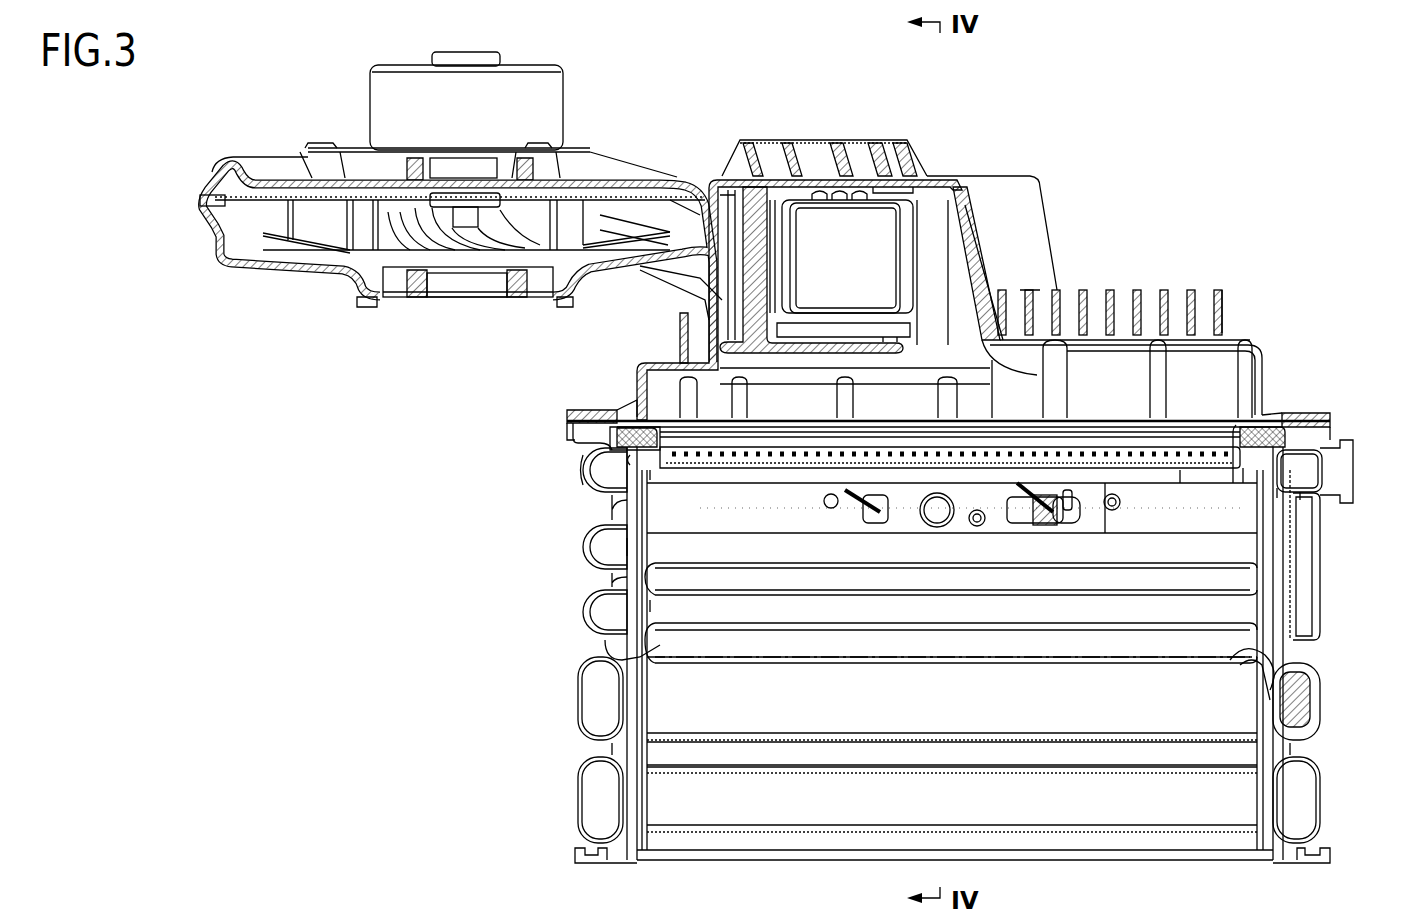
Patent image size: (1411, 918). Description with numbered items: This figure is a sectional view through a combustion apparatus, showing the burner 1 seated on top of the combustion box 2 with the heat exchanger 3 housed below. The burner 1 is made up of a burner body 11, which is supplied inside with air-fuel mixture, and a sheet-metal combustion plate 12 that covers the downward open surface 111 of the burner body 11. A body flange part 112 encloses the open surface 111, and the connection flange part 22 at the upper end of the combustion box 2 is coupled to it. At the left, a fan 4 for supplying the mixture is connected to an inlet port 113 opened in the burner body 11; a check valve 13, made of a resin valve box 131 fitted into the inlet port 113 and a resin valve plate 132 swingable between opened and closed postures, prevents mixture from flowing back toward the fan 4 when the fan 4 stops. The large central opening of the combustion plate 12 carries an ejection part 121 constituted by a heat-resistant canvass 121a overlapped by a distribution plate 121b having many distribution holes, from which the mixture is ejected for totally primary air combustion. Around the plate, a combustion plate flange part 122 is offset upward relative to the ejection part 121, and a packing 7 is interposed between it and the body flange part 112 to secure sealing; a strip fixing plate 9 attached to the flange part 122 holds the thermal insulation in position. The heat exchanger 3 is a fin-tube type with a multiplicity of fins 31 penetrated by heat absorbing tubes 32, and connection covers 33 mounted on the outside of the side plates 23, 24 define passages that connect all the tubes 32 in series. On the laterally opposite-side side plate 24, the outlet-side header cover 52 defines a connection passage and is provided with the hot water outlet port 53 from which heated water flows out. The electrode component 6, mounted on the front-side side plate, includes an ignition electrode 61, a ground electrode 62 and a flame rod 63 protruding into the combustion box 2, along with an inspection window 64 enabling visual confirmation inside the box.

The burner 1 is at (1100, 285).
The combustion box 2 is at (1305, 628).
The heat exchanger 3 is at (968, 656).
The fan 4 is at (275, 147).
The electrode component 6 is at (1067, 540).
The packing 7 is at (1308, 412).
The fixing plate 9 is at (640, 430).
The burner body 11 is at (985, 215).
The combustion plate 12 is at (1243, 470).
The check valve 13 is at (892, 258).
The connection flange part 22 is at (572, 438).
The side plate 23 is at (1300, 580).
The side plate 24 is at (612, 657).
The fins 31 is at (1248, 665).
The heat absorbing tubes 32 is at (855, 770).
The connection covers 33 is at (580, 800).
The outlet-side header cover 52 is at (1318, 565).
The hot water outlet port 53 is at (1352, 482).
The ignition electrode 61 is at (1075, 520).
The ground electrode 62 is at (1045, 522).
The flame rod 63 is at (850, 514).
The inspection window 64 is at (940, 514).
The open surface 111 is at (898, 447).
The body flange part 112 is at (603, 410).
The inlet port 113 is at (725, 300).
The ejection part 121 is at (1220, 535).
The canvass 121a is at (1140, 475).
The distribution plate 121b is at (1185, 470).
The combustion plate flange part 122 is at (640, 418).
The valve box 131 is at (797, 312).
The valve plate 132 is at (902, 285).